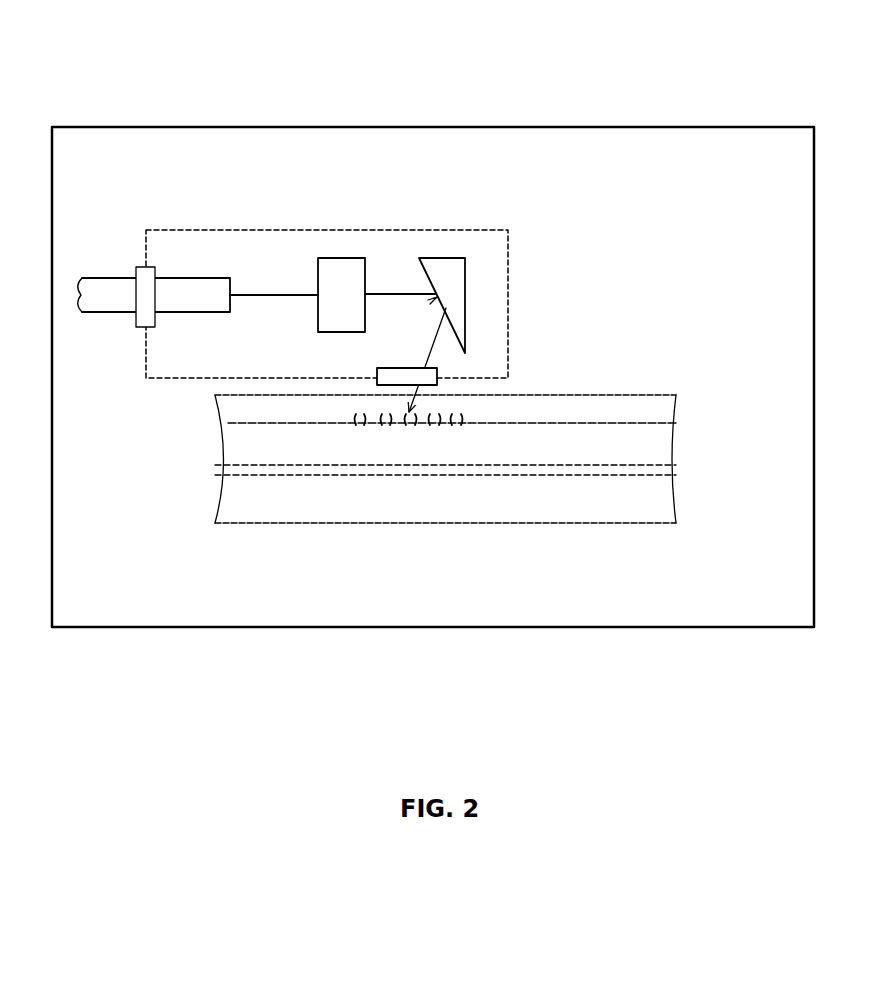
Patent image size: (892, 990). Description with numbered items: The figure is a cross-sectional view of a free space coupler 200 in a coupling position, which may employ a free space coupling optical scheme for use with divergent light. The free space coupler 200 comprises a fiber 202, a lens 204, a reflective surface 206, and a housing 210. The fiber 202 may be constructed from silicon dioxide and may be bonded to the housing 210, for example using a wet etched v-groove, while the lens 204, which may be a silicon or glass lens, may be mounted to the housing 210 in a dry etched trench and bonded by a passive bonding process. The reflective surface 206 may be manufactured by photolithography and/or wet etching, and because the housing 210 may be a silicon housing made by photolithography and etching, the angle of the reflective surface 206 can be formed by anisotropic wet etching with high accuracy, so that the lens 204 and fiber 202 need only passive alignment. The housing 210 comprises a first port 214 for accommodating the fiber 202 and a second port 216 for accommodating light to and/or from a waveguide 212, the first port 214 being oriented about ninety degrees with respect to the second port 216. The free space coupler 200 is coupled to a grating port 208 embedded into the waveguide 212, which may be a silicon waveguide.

The free space coupler 200 is at (122, 70).
The fiber 202 is at (157, 278).
The lens 204 is at (340, 258).
The reflective surface 206 is at (452, 258).
The grating port 208 is at (437, 298).
The housing 210 is at (508, 300).
The waveguide 212 is at (605, 395).
The first port 214 is at (137, 324).
The second port 216 is at (438, 376).